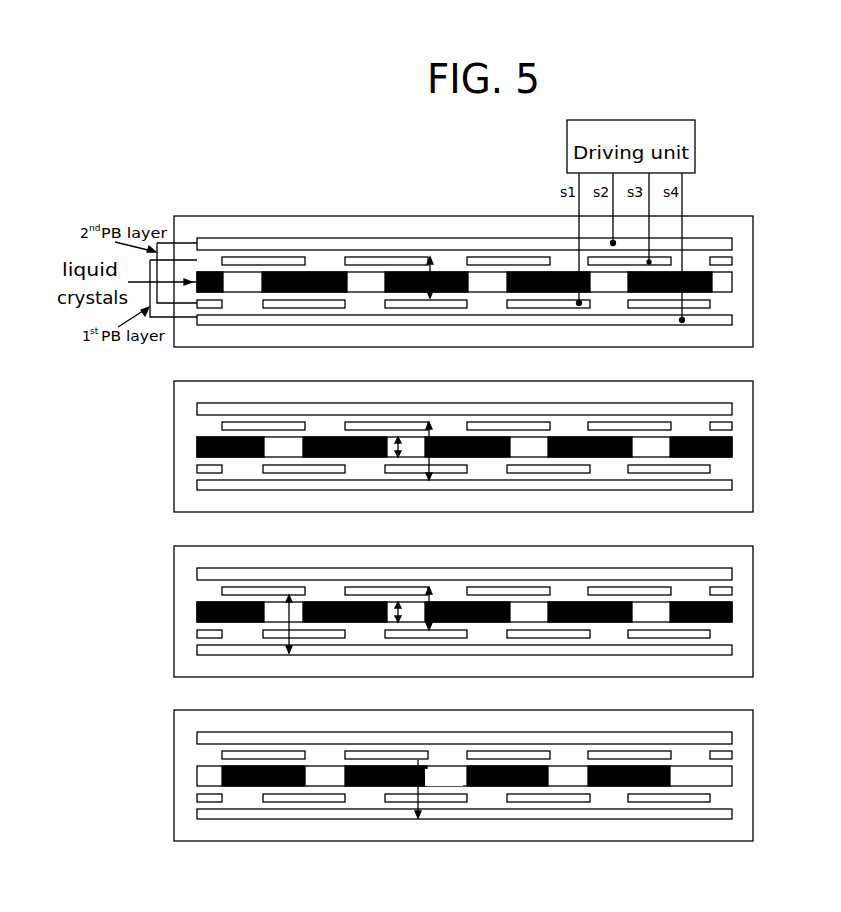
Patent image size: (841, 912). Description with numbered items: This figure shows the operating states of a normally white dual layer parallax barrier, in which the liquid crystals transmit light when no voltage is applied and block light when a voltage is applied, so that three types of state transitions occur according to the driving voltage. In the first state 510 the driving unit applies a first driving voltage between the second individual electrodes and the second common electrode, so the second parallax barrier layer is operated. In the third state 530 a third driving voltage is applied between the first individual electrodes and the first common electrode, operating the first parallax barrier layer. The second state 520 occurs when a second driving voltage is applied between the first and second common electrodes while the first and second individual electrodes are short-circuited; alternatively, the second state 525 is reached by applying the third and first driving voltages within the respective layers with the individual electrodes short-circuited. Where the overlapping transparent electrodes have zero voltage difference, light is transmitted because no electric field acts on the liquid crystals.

The first state (state 1) 510 is at (753, 237).
The second state (state 2) 520 is at (753, 402).
The second state (state 2), alternative 525 is at (753, 567).
The third state (state 3) 530 is at (753, 732).